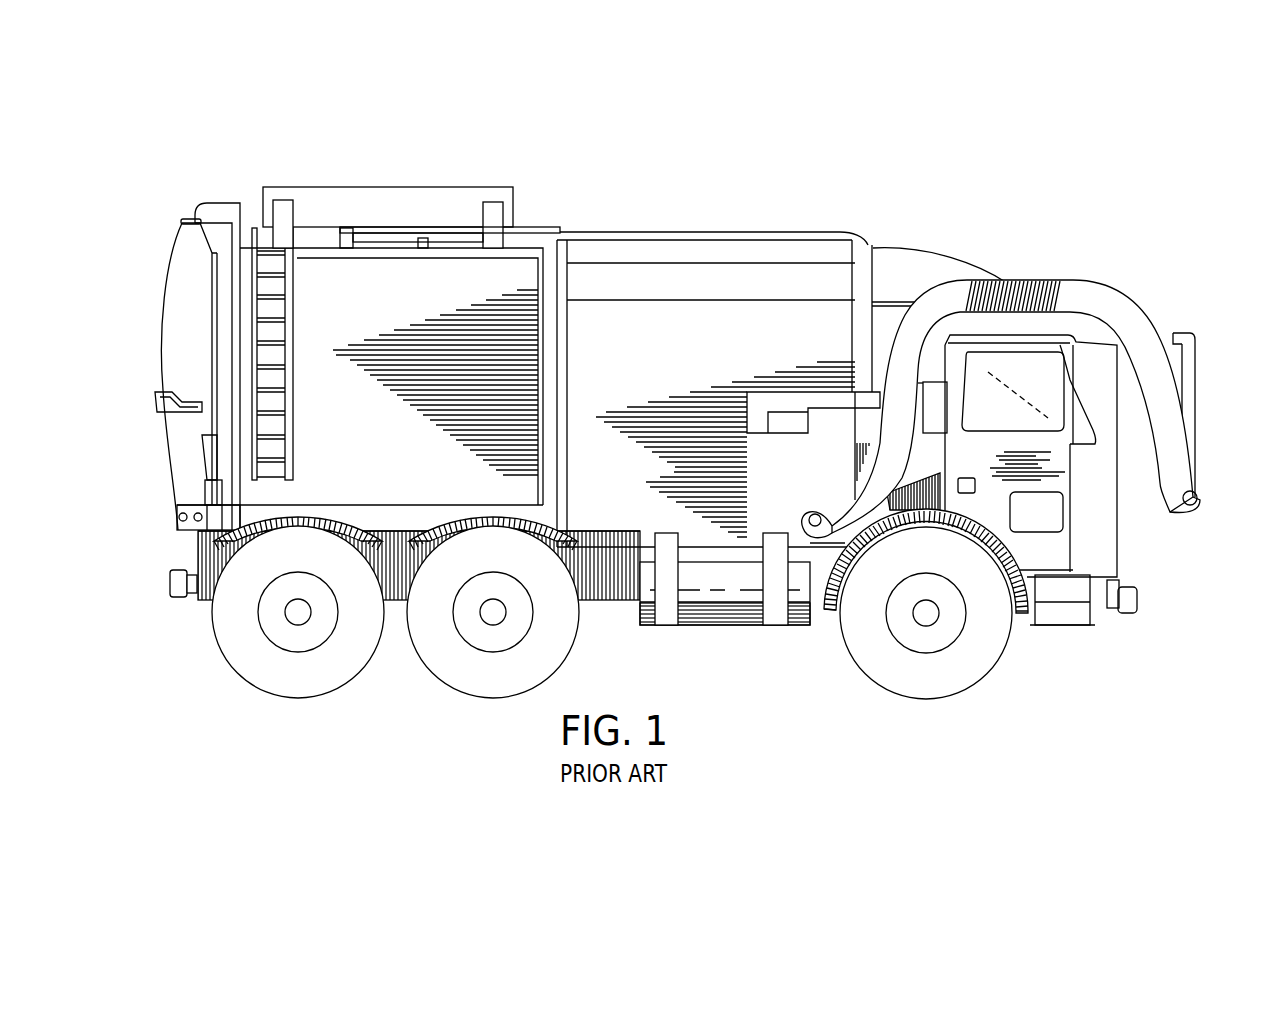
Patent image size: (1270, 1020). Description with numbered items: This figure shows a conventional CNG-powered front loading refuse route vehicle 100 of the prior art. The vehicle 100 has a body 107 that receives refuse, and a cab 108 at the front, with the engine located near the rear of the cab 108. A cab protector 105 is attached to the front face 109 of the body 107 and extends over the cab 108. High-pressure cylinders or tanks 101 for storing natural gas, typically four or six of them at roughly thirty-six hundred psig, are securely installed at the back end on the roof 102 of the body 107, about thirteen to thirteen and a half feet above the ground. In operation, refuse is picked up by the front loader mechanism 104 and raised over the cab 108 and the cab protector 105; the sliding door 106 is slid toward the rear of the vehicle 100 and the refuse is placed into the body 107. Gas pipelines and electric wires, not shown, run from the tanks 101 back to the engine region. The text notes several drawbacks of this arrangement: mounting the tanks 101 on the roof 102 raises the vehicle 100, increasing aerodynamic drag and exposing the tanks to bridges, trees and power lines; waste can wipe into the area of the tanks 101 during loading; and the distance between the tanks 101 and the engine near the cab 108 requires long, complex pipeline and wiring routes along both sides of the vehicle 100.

The vehicle 100 is at (813, 165).
The cylinders or tanks 101 is at (335, 183).
The roof 102 is at (667, 227).
The front loader mechanism 104 is at (1152, 308).
The cab protector 105 is at (960, 255).
The sliding door 106 is at (527, 227).
The body 107 is at (362, 443).
The cab 108 is at (1127, 532).
The front face 109 is at (884, 300).